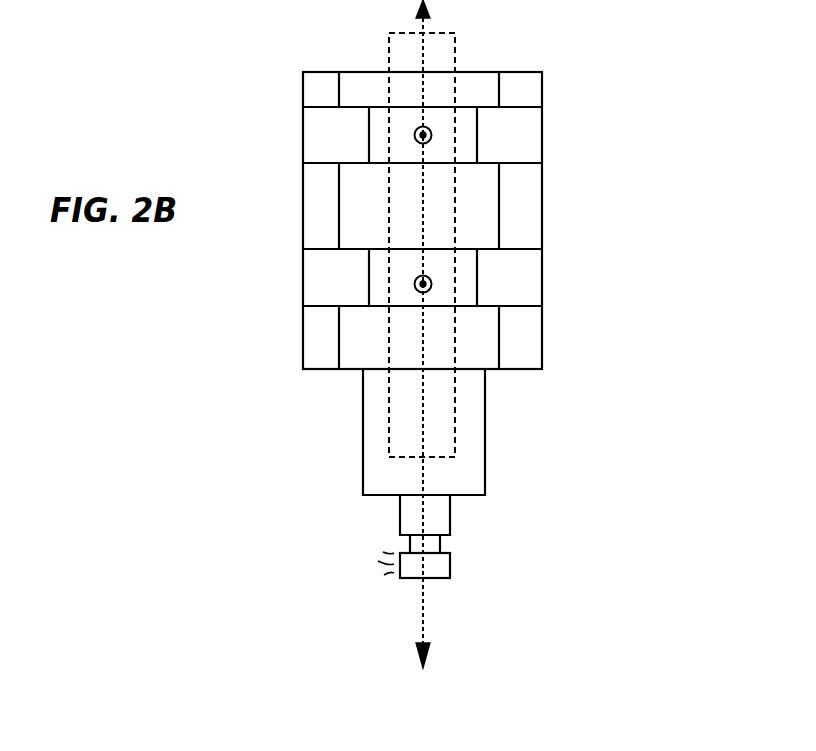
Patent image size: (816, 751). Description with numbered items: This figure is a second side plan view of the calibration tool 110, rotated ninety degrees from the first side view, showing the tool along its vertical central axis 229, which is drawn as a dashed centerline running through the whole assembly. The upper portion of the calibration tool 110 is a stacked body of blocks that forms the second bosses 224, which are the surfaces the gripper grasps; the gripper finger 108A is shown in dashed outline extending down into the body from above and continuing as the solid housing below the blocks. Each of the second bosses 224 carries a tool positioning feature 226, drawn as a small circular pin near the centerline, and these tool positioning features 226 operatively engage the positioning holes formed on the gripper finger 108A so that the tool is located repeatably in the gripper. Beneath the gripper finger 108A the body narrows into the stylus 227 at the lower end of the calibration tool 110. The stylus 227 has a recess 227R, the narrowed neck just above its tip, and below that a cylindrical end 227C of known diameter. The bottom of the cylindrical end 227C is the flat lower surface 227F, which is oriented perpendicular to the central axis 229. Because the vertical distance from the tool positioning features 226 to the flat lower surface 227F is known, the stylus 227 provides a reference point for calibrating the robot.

The calibration tool 110 is at (563, 50).
The second bosses 224 is at (478, 130).
The tool positioning features 226 is at (430, 142).
The gripper finger 108A is at (455, 417).
The recess 227R is at (440, 545).
The stylus 227 is at (450, 565).
The cylindrical end 227C is at (378, 564).
The flat lower surface 227F is at (437, 578).
The central axis 229 is at (418, 617).